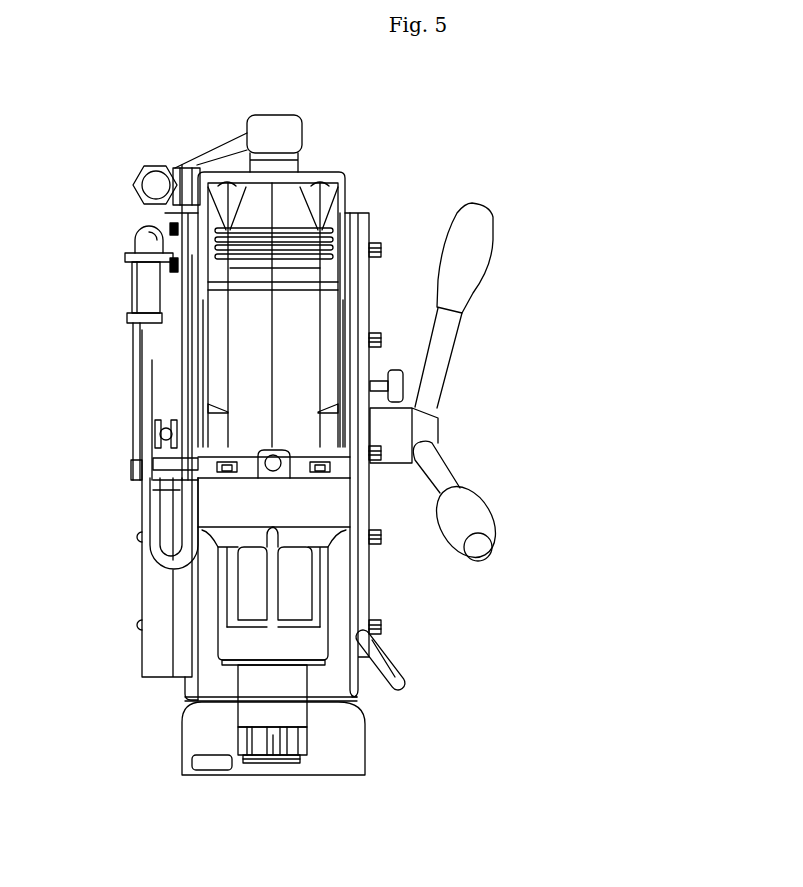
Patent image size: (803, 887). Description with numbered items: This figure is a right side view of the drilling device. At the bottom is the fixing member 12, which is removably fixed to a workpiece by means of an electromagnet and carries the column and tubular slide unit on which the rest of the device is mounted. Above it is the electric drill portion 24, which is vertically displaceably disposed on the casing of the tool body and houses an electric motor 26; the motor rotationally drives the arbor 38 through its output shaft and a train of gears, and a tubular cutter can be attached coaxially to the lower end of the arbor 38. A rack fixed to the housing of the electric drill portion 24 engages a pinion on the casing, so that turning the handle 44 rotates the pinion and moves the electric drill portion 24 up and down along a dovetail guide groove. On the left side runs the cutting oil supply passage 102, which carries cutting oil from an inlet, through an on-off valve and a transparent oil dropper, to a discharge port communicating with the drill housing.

The fixing member 12 is at (352, 750).
The electric drill portion 24 is at (333, 143).
The electric motor 26 is at (218, 342).
The arbor 38 is at (253, 710).
The handle 44 is at (482, 178).
The cutting oil supply passage 102 is at (150, 508).